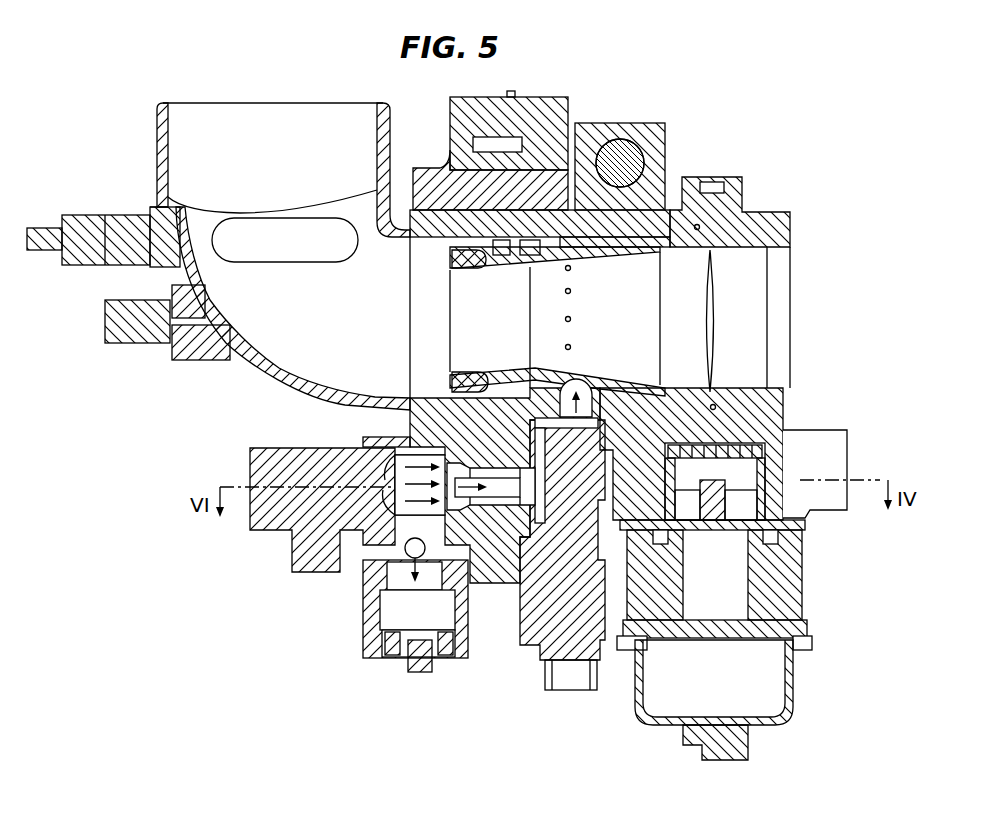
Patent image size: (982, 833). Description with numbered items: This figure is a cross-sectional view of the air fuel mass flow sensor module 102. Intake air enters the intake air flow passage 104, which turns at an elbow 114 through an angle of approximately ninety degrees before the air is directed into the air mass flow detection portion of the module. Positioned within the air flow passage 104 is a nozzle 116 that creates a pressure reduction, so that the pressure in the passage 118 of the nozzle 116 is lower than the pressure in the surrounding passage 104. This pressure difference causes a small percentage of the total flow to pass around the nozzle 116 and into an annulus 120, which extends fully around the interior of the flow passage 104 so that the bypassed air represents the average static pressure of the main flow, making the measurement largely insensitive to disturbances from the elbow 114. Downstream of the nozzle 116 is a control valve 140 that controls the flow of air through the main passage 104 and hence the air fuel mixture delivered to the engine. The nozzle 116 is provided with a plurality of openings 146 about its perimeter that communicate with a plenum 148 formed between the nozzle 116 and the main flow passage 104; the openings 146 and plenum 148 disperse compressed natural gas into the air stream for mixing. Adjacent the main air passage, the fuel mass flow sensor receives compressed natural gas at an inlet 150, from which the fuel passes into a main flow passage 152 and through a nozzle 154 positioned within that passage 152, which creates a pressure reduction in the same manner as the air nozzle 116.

The air fuel mass flow sensor module 102 is at (220, 453).
The intake air flow passage 104 is at (157, 136).
The elbow 114 is at (280, 392).
The nozzle 116 is at (488, 384).
The passage of the nozzle 118 is at (506, 317).
The annulus 120 is at (477, 387).
The control valve 140 is at (714, 310).
The openings 146 is at (570, 319).
The plenum 148 is at (590, 257).
The inlet 150 is at (383, 612).
The main flow passage 152 is at (395, 500).
The nozzle 154 is at (498, 506).